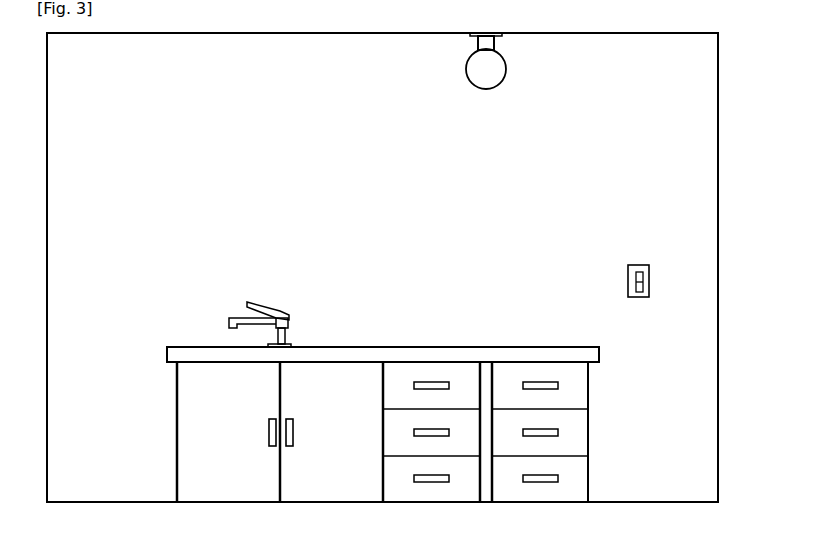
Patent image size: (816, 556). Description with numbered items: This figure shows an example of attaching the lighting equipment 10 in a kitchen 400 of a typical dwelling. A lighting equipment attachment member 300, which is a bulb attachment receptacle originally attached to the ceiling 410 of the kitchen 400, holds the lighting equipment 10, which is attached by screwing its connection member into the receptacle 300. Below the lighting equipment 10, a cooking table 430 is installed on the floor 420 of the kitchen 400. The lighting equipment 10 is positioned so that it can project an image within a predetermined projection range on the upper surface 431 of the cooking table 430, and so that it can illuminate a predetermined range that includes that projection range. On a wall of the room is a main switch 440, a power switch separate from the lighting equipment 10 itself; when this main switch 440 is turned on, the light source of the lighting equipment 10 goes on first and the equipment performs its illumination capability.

The lighting equipment 10 is at (462, 70).
The lighting equipment attachment member 300 is at (495, 43).
The kitchen 400 is at (171, 182).
The ceiling 410 is at (332, 35).
The floor 420 is at (96, 500).
The cooking table 430 is at (177, 397).
The upper surface 431 is at (413, 347).
The main switch 440 is at (627, 278).